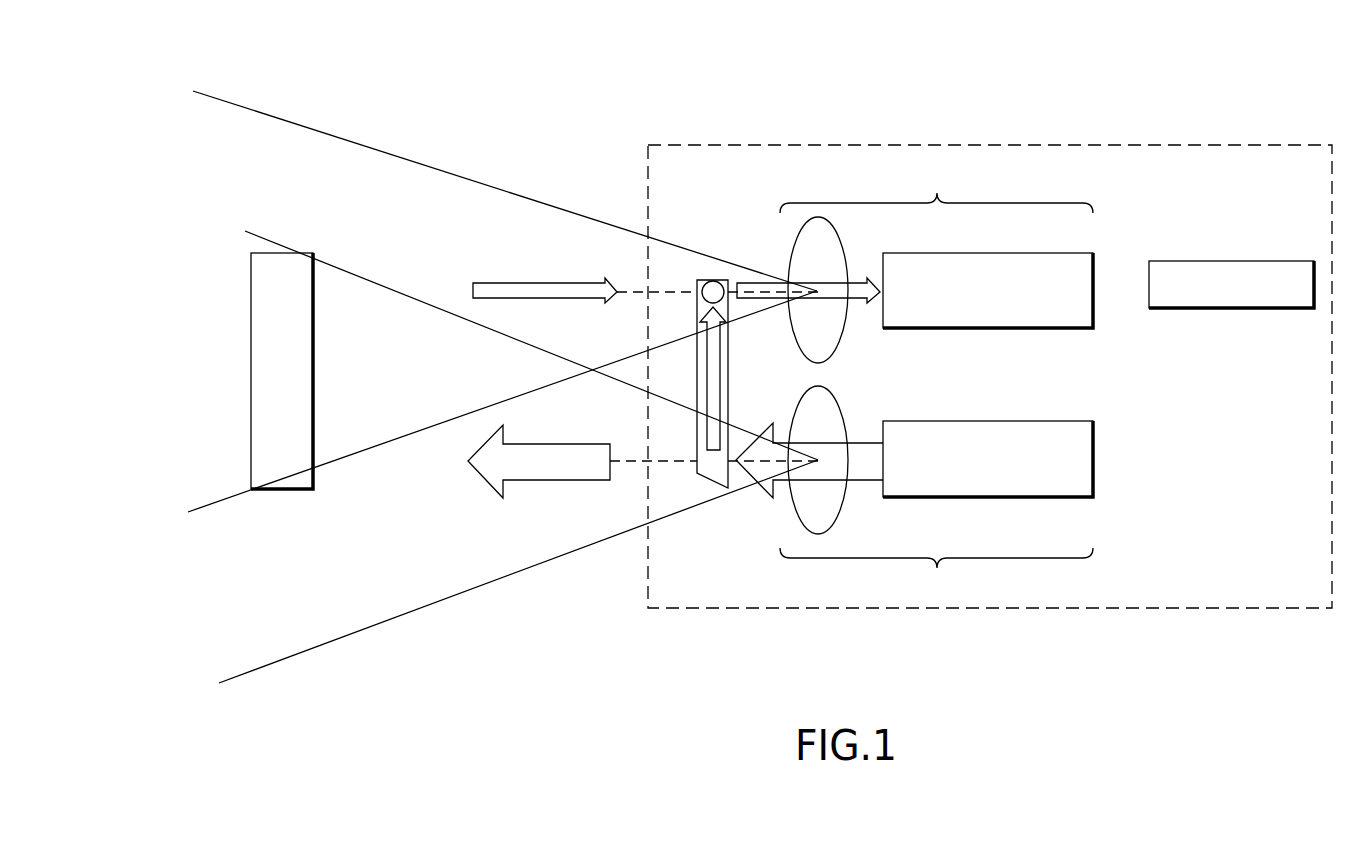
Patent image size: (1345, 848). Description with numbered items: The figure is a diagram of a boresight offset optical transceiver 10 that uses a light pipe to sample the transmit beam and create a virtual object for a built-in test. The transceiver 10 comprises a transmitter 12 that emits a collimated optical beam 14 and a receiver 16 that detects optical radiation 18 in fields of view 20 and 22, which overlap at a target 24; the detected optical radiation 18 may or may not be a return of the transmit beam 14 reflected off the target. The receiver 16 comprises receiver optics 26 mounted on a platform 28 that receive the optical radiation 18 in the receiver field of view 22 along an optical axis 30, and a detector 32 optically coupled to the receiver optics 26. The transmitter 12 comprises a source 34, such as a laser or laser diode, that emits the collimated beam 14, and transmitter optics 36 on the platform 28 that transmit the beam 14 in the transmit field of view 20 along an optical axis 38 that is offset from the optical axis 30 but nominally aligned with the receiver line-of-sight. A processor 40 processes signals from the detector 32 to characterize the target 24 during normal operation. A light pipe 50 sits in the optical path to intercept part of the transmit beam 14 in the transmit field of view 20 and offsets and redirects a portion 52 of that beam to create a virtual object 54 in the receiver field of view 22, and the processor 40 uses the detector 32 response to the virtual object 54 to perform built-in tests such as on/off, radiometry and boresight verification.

The boresight offset optical transceiver 10 is at (627, 75).
The transmitter 12 is at (936, 573).
The collimated optical beam 14 is at (863, 443).
The receiver 16 is at (936, 188).
The optical radiation 18 is at (862, 300).
The transmit field of view 20 is at (608, 540).
The receiver field of view 22 is at (540, 202).
The target 24 is at (282, 253).
The receiver optics 26 is at (790, 250).
The platform 28 is at (1258, 569).
The optical axis 30 is at (660, 291).
The detector 32 is at (1064, 330).
The source 34 is at (1094, 460).
The transmitter optics 36 is at (790, 502).
The optical axis 38 is at (666, 462).
The processor 40 is at (1238, 261).
The light pipe 50 is at (708, 483).
The portion of the collimated transmit beam 52 is at (728, 358).
The virtual object 54 is at (712, 281).